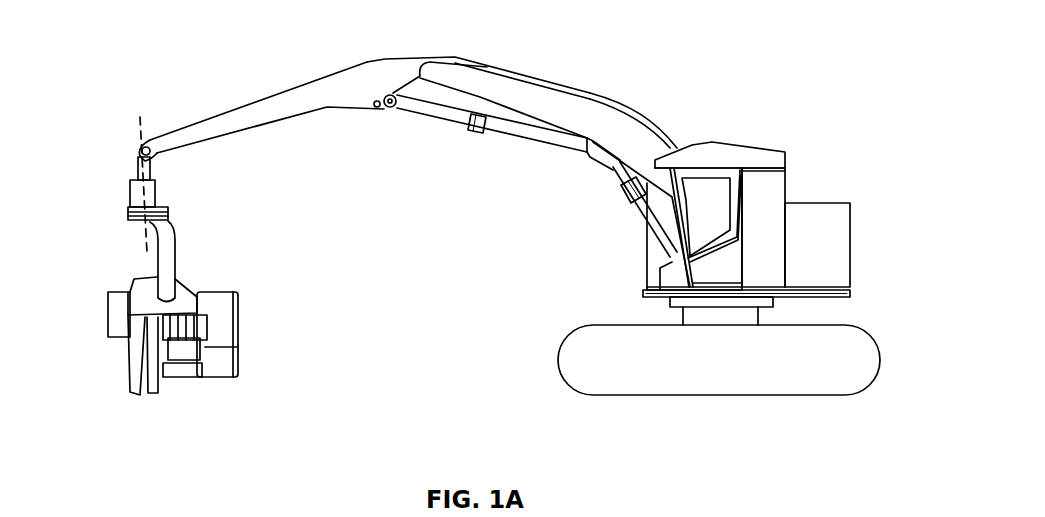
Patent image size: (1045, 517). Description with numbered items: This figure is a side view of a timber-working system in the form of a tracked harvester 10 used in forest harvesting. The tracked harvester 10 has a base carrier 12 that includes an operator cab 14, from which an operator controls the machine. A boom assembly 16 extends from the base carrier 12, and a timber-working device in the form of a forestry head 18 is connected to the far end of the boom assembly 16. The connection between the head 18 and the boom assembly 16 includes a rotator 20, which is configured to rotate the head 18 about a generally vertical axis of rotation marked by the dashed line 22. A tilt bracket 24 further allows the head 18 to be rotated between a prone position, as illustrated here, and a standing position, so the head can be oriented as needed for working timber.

The tracked harvester 10 is at (818, 80).
The base carrier 12 is at (577, 330).
The operator cab 14 is at (712, 145).
The boom assembly 16 is at (483, 98).
The forestry head 18 is at (250, 291).
The rotator 20 is at (130, 197).
The axis of rotation 22 is at (136, 173).
The tilt bracket 24 is at (177, 237).